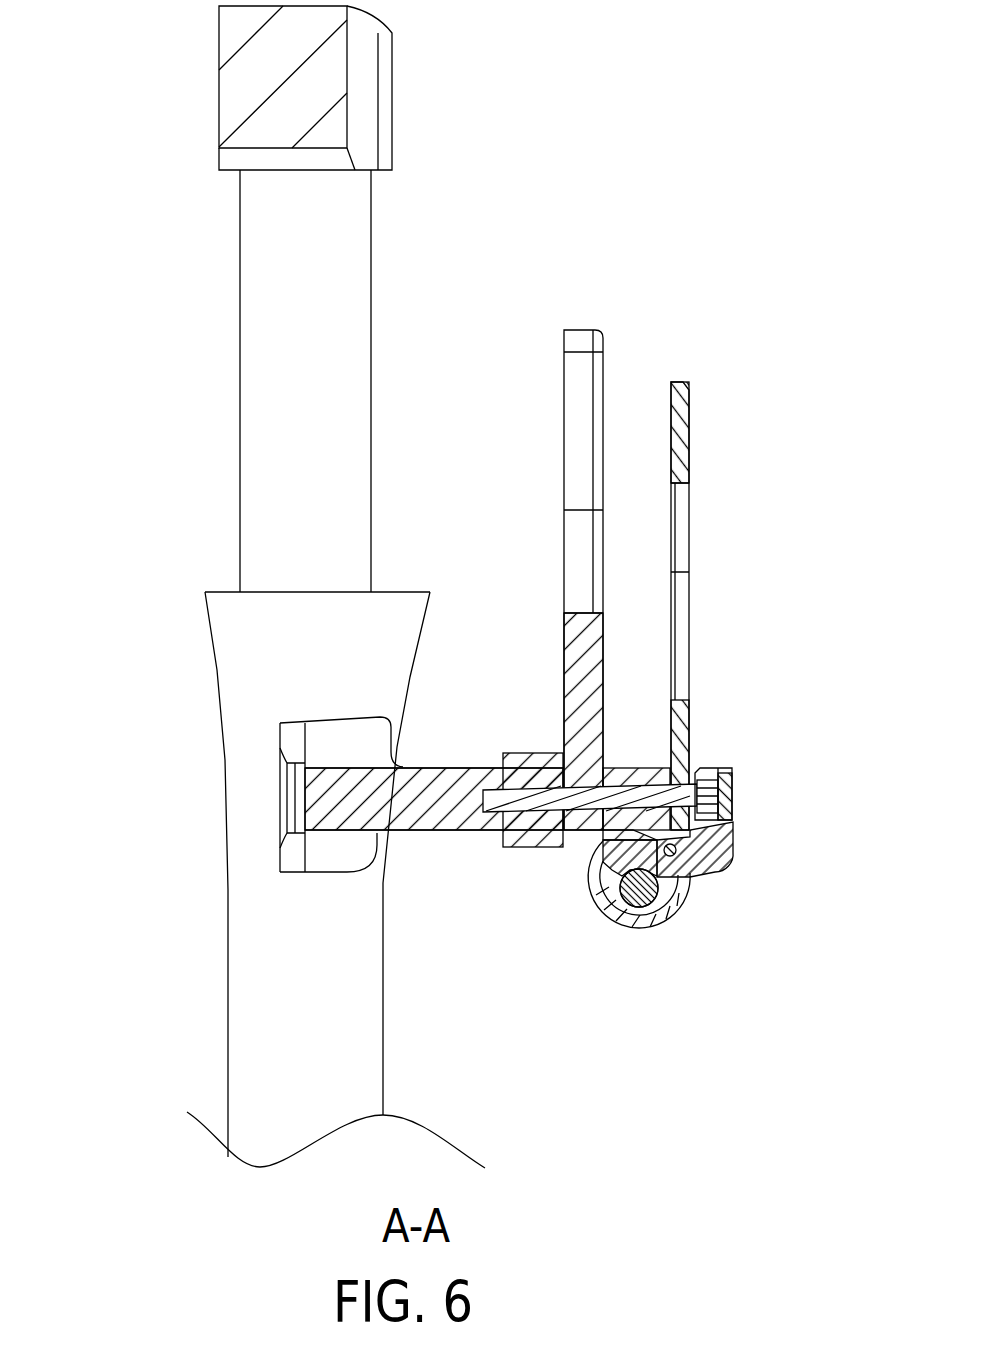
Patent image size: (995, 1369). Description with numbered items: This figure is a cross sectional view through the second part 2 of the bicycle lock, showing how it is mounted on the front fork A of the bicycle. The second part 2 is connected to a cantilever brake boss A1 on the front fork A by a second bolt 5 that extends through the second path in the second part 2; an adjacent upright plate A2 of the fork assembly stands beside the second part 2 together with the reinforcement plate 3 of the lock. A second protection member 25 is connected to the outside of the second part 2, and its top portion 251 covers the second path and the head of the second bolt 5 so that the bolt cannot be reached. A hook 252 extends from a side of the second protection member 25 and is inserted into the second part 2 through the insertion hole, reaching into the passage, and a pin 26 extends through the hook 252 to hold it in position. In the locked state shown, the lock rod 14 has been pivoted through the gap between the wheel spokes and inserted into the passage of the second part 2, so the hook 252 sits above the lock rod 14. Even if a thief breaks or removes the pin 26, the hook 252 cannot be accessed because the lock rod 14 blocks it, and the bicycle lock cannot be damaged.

The front fork A is at (300, 423).
The cantilever brake boss A1 is at (365, 797).
The mounting plate A2 is at (580, 390).
The second part 2 is at (638, 777).
The reinforcement plate 3 is at (683, 382).
The second bolt 5 is at (647, 794).
The lock rod 14 is at (647, 903).
The second protection member 25 is at (717, 853).
The top portion 251 is at (728, 773).
The hook 252 is at (607, 870).
The pin 26 is at (672, 853).